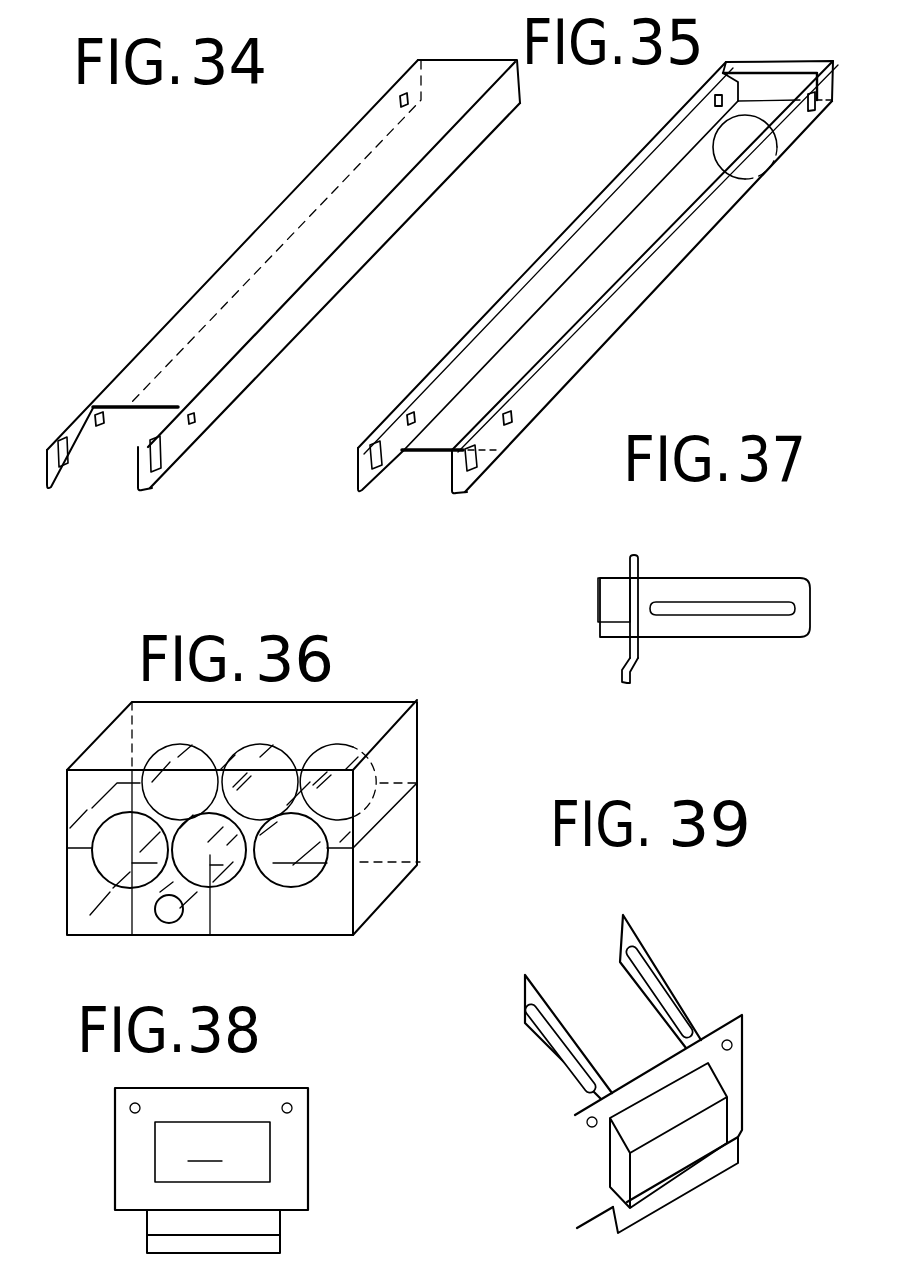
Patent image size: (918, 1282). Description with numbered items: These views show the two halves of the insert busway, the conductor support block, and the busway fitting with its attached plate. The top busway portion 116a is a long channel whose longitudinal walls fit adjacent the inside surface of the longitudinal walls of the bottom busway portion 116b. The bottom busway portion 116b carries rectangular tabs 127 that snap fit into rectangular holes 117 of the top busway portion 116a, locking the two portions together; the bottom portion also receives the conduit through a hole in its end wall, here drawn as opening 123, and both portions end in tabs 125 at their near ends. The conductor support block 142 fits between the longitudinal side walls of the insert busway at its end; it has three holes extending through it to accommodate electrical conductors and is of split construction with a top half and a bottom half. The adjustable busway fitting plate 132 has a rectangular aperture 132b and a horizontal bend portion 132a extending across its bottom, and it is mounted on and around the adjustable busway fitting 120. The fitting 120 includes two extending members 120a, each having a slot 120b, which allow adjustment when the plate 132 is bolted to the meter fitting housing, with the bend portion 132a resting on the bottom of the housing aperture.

In FIG. 34, the top busway portion 116a is at (303, 245).
In FIG. 35, the bottom busway portion 116b is at (620, 245).
In FIG. 34, the rectangular holes 117 is at (400, 100).
In FIG. 35, the hole 123 is at (770, 166).
In FIG. 34, the tab 125 is at (55, 488).
In FIG. 35, the tab 125 is at (360, 492).
In FIG. 34, the rectangular tabs 127 is at (97, 415).
In FIG. 35, the rectangular tabs 127 is at (715, 98).
In FIG. 37, the adjustable busway fitting 120 is at (690, 577).
In FIG. 38, the adjustable busway fitting 120 is at (98, 1150).
In FIG. 39, the adjustable busway fitting 120 is at (752, 946).
In FIG. 37, the extending members 120a is at (768, 590).
In FIG. 39, the extending members 120a is at (655, 975).
In FIG. 37, the slot 120b is at (735, 606).
In FIG. 39, the slot 120b is at (545, 1012).
In FIG. 37, the adjustable busway fitting plate 132 is at (628, 620).
In FIG. 38, the adjustable busway fitting plate 132 is at (238, 1110).
In FIG. 39, the adjustable busway fitting plate 132 is at (728, 1072).
In FIG. 37, the horizontal bend portion 132a is at (625, 680).
In FIG. 38, the horizontal bend portion 132a is at (280, 1237).
In FIG. 39, the horizontal bend portion 132a is at (632, 1215).
In FIG. 37, the rectangular aperture 132b is at (620, 598).
In FIG. 39, the rectangular aperture 132b is at (690, 1093).
In FIG. 36, the conductor support block 142 is at (380, 722).